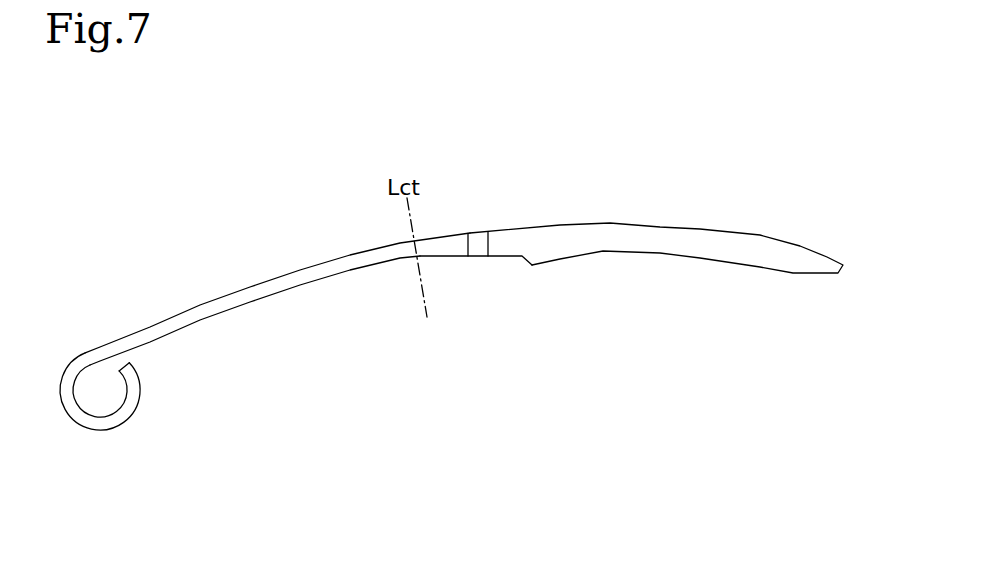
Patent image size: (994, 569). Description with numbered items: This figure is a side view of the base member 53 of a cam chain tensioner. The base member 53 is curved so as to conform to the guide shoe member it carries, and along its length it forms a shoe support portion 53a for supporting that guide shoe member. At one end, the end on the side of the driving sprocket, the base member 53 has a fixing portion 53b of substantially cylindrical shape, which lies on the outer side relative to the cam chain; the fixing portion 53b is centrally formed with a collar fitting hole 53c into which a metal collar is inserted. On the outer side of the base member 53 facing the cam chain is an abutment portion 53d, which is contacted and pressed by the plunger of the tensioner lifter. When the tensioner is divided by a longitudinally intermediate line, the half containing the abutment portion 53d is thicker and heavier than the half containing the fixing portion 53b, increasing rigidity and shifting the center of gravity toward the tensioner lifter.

The base member 53 is at (451, 293).
The shoe support portion 53a is at (332, 268).
The fixing portion 53b is at (102, 425).
The collar fitting hole 53c is at (120, 397).
The abutment portion 53d is at (535, 258).